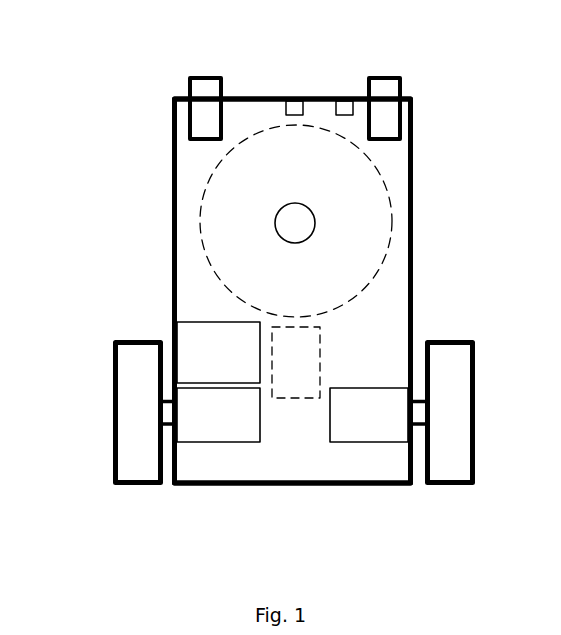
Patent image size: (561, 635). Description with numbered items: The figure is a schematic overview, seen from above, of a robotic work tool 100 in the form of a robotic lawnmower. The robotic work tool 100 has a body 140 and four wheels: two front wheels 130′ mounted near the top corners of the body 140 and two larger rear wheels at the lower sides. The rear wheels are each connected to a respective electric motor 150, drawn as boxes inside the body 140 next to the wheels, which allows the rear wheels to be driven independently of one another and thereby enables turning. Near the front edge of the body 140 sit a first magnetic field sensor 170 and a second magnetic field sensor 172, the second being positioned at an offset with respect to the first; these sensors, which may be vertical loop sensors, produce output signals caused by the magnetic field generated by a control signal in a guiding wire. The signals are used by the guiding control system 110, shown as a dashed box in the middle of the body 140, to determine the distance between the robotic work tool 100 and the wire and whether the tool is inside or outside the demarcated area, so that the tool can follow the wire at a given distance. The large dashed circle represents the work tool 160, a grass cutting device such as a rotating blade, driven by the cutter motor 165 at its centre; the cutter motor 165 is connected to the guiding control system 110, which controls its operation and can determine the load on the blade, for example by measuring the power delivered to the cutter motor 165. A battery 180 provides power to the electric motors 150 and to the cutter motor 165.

The robotic work tool 100 is at (122, 80).
The guiding control system 110 is at (320, 358).
The front wheels 130′ is at (195, 130).
The body 140 is at (197, 486).
The electric motor 150 is at (333, 427).
The work tool 160 is at (208, 260).
The cutter motor 165 is at (275, 232).
The first magnetic field sensor 170 is at (288, 97).
The second magnetic field sensor 172 is at (350, 97).
The battery 180 is at (192, 343).